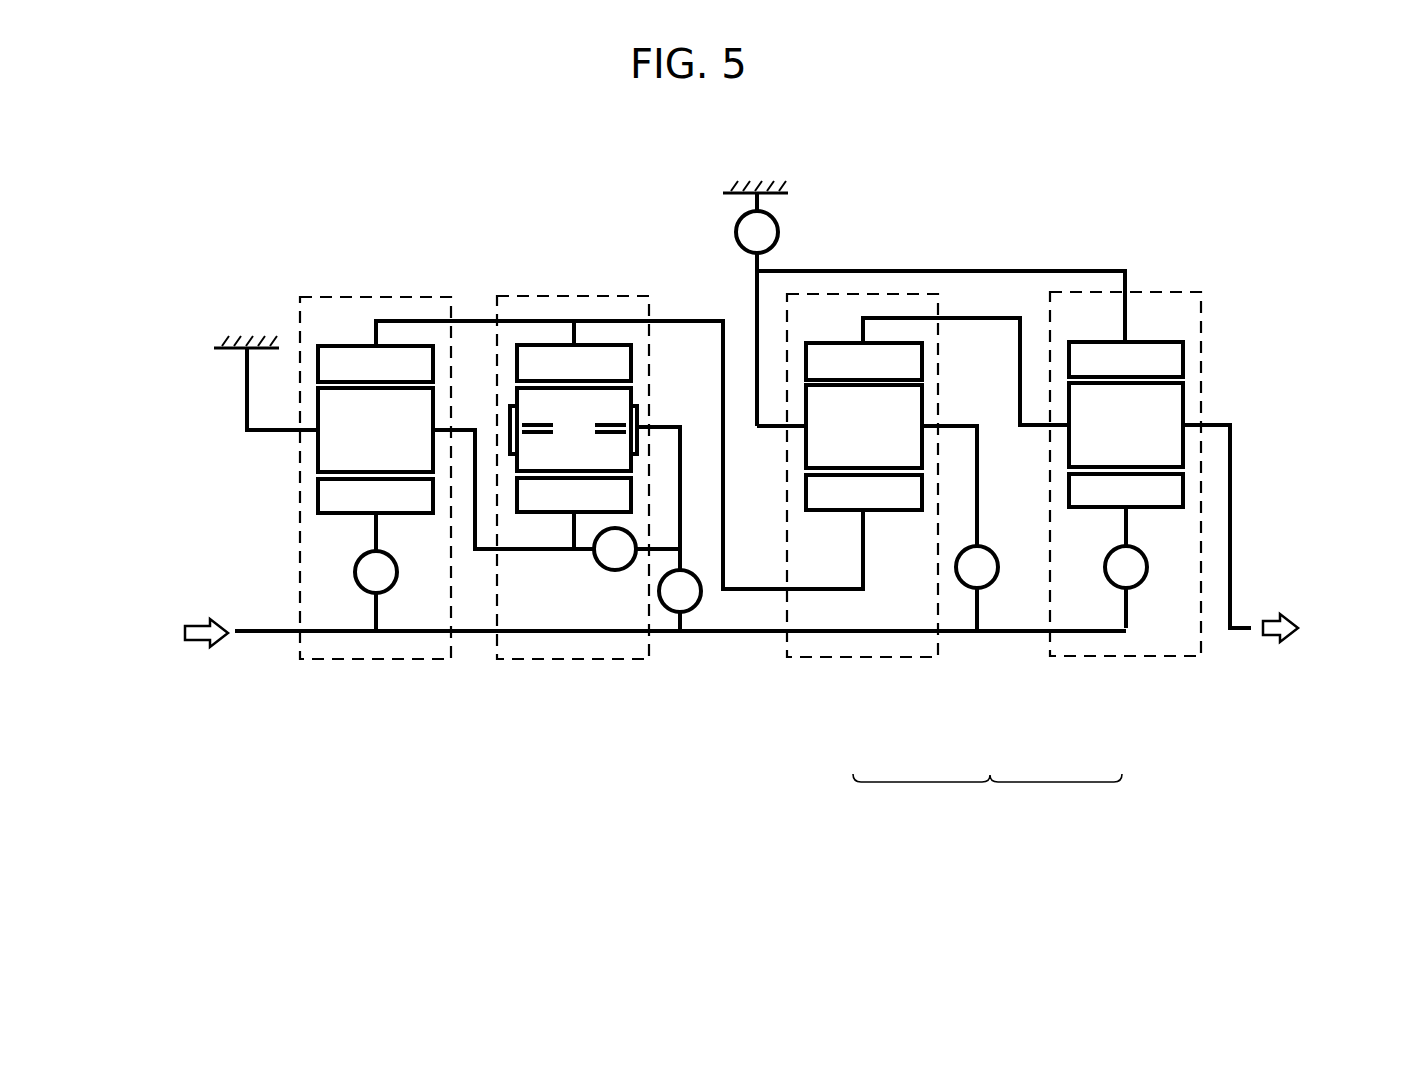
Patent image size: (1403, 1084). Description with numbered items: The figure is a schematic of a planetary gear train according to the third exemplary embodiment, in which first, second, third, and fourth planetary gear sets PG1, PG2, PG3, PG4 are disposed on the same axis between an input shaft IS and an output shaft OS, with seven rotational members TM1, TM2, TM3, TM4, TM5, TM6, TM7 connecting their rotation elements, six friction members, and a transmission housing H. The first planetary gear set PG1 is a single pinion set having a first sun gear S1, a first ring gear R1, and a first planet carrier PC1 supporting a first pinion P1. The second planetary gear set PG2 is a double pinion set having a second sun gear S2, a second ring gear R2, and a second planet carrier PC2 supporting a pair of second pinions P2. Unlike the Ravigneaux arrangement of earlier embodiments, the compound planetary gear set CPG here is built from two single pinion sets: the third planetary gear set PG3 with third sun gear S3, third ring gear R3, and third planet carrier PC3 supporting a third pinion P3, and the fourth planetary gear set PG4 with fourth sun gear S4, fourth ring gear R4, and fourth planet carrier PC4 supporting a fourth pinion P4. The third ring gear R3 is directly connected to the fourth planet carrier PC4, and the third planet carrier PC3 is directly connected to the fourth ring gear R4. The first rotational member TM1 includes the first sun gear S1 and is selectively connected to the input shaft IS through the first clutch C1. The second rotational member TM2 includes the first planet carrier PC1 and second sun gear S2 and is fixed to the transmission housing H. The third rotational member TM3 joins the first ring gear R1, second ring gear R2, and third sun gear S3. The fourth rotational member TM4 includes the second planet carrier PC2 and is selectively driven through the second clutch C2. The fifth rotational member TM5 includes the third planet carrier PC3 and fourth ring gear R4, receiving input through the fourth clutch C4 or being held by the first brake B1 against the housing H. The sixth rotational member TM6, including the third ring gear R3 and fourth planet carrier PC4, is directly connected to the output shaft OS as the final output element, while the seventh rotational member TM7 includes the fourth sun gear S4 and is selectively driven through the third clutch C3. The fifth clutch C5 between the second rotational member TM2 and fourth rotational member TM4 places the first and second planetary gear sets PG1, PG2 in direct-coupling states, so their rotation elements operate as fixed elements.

The input shaft IS is at (253, 636).
The output shaft OS is at (1240, 632).
The first planetary gear set PG1 is at (376, 663).
The second planetary gear set PG2 is at (576, 663).
The third planetary gear set PG3 is at (858, 661).
The fourth planetary gear set PG4 is at (1128, 660).
The compound planetary gear set CPG is at (987, 799).
The first ring gear R1 is at (375, 364).
The first pinion P1 is at (375, 430).
The first sun gear S1 is at (375, 496).
The second ring gear R2 is at (574, 363).
The second pinions P2 is at (574, 429).
The second sun gear S2 is at (574, 495).
The third ring gear R3 is at (864, 361).
The third pinion P3 is at (864, 426).
The third sun gear S3 is at (864, 492).
The fourth ring gear R4 is at (1126, 359).
The fourth pinion P4 is at (1126, 425).
The fourth sun gear S4 is at (1126, 490).
The first planet carrier PC1 is at (305, 433).
The second planet carrier PC2 is at (640, 426).
The third planet carrier PC3 is at (762, 430).
The fourth planet carrier PC4 is at (1034, 428).
The first rotational member TM1 is at (376, 533).
The second rotational member TM2 is at (526, 551).
The third rotational member TM3 is at (472, 320).
The fourth rotational member TM4 is at (692, 452).
The fifth rotational member TM5 is at (760, 294).
The sixth rotational member TM6 is at (971, 320).
The seventh rotational member TM7 is at (1126, 522).
The first clutch C1 is at (376, 591).
The second clutch C2 is at (680, 600).
The third clutch C3 is at (1126, 587).
The fourth clutch C4 is at (960, 528).
The fifth clutch C5 is at (615, 549).
The first brake B1 is at (757, 223).
The transmission housing H is at (247, 346).